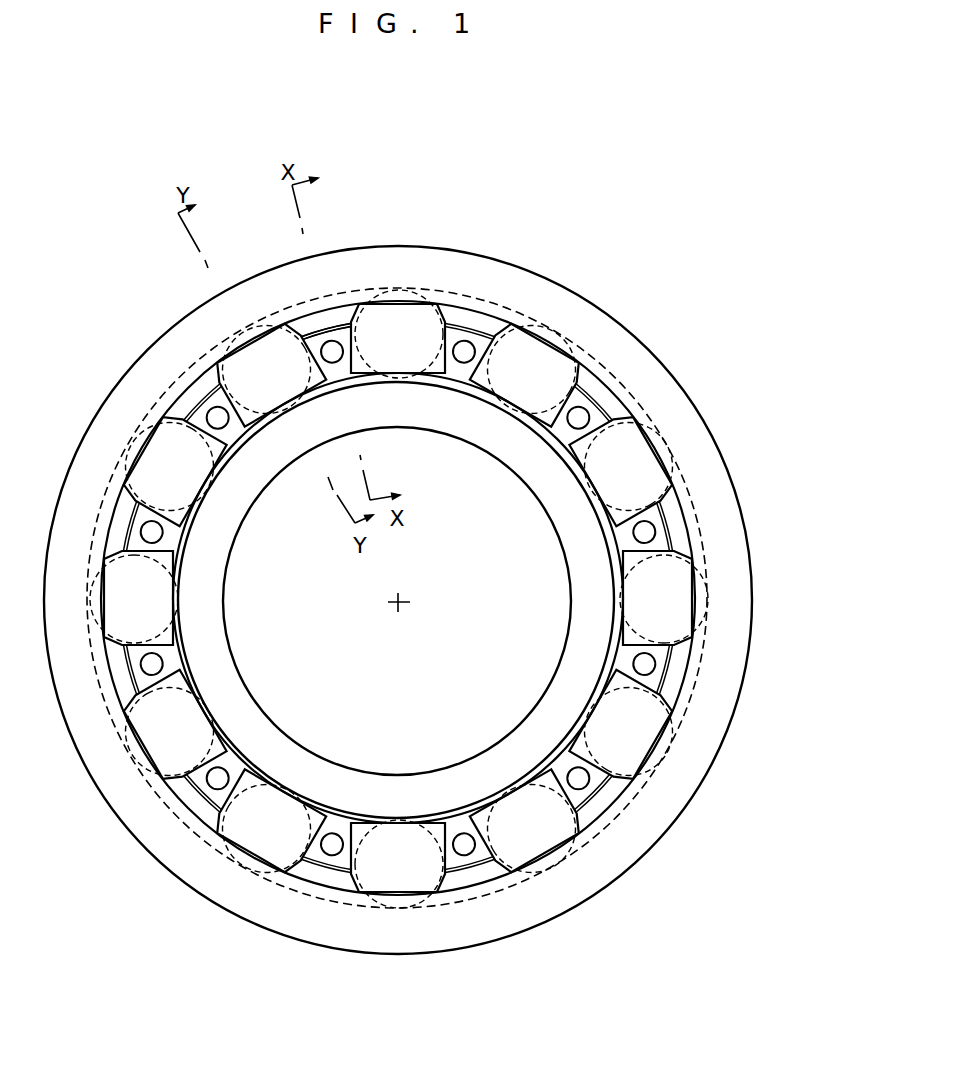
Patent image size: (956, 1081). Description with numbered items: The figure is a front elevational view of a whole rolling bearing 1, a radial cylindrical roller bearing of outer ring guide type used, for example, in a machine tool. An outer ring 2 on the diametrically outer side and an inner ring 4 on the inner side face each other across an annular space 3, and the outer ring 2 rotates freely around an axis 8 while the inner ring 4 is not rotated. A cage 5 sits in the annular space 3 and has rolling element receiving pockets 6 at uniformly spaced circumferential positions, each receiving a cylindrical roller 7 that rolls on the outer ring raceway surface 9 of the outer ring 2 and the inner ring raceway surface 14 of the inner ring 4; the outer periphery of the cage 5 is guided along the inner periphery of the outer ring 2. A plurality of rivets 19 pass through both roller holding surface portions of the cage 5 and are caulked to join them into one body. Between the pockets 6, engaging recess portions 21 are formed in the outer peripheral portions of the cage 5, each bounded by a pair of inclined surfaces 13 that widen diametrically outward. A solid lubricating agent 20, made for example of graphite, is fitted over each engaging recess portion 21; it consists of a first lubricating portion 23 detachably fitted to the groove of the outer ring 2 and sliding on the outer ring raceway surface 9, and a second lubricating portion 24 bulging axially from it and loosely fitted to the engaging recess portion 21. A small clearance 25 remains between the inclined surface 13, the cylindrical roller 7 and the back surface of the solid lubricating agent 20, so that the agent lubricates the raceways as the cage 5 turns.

The rolling bearing 1 is at (647, 306).
The outer ring 2 is at (680, 408).
The annular space 3 is at (546, 428).
The inner ring 4 is at (582, 650).
The cage 5 is at (700, 538).
The rolling element receiving pocket 6 is at (640, 678).
The cylindrical roller 7 is at (597, 480).
The axis 8 is at (398, 597).
The outer ring raceway surface 9 is at (366, 318).
The inclined surface 13 is at (612, 407).
The inner ring raceway surface 14 is at (516, 412).
The rivet 19 is at (650, 542).
The solid lubricating agent 20 is at (764, 520).
The engaging recess portion 21 is at (510, 328).
The first lubricating portion 23 is at (673, 529).
The second lubricating portion 24 is at (680, 542).
The small clearance 25 is at (673, 500).